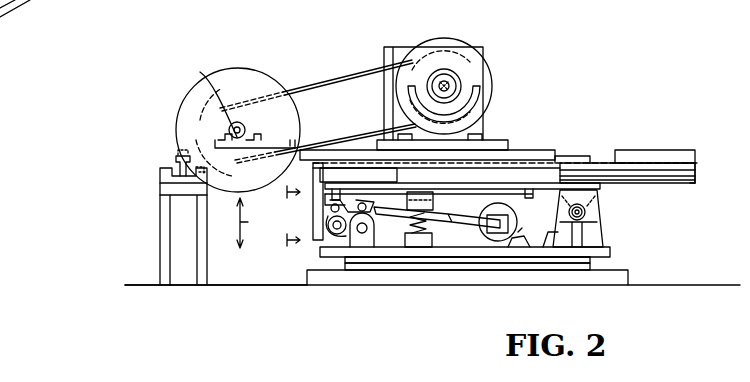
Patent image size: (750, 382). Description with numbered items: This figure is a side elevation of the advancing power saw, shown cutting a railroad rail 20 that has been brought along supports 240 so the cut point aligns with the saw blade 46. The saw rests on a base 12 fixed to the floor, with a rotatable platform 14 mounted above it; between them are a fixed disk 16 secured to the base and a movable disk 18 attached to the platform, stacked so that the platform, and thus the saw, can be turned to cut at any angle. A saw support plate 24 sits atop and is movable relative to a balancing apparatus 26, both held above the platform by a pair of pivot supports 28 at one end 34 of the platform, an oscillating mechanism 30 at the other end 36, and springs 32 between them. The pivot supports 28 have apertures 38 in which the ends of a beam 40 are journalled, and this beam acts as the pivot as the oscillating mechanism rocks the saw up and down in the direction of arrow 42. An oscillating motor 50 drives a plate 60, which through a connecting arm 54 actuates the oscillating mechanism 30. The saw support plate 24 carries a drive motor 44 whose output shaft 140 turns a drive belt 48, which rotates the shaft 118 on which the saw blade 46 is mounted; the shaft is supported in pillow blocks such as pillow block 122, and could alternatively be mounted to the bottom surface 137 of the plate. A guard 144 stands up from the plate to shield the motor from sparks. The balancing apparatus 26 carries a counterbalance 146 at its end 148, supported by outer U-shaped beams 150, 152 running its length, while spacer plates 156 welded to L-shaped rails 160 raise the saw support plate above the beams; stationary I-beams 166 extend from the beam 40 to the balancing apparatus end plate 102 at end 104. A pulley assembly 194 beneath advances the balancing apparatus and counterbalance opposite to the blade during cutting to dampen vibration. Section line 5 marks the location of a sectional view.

The section line 5 is at (299, 217).
The base 12 is at (612, 280).
The rotatable platform 14 is at (612, 250).
The fixed disk 16 is at (590, 268).
The movable disk 18 is at (590, 261).
The railroad rail 20 is at (178, 158).
The saw support plate 24 is at (513, 140).
The balancing apparatus 26 is at (696, 184).
The pivot supports 28 is at (603, 210).
The oscillating mechanism 30 is at (378, 228).
The springs 32 is at (432, 242).
The end of platform 34 is at (612, 257).
The end of platform 36 is at (216, 274).
The apertures 38 is at (596, 188).
The beam 40 is at (541, 227).
The arrow 42 is at (254, 223).
The drive motor 44 is at (468, 40).
The saw blade 46 is at (243, 60).
The drive belt 48 is at (343, 60).
The oscillating motor 50 is at (522, 230).
The connecting arm 54 is at (452, 218).
The plate 60 is at (497, 233).
The balancing apparatus end plate 102 is at (336, 176).
The end of balancing apparatus 104 is at (328, 180).
The shaft 118 is at (246, 128).
The pillow block 122 is at (205, 93).
The bottom surface of saw support plate 137 is at (168, 100).
The output shaft 140 is at (464, 89).
The guard 144 is at (393, 47).
The counterbalance 146 is at (668, 155).
The end of balancing apparatus 148 is at (694, 177).
The U-shaped beam 150 is at (679, 184).
The U-shaped beam 152 is at (694, 165).
The spacer plates 156 is at (570, 155).
The L-shaped rails 160 is at (591, 172).
The I-beams 166 is at (600, 168).
The pulley assembly 194 is at (522, 186).
The supports 240 is at (160, 207).